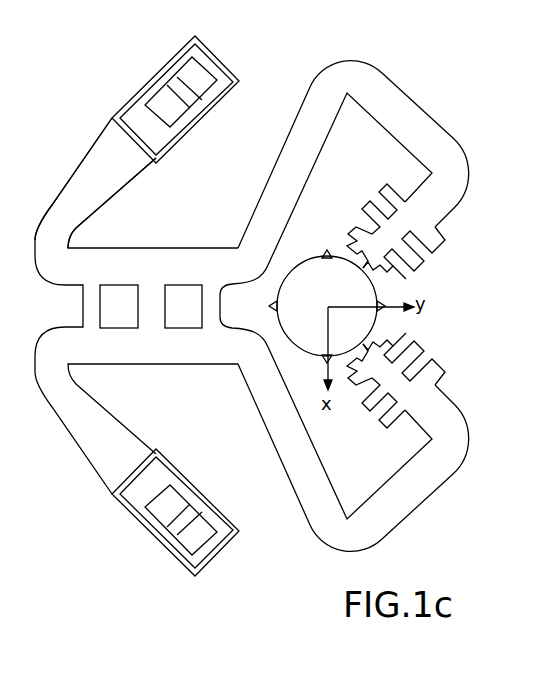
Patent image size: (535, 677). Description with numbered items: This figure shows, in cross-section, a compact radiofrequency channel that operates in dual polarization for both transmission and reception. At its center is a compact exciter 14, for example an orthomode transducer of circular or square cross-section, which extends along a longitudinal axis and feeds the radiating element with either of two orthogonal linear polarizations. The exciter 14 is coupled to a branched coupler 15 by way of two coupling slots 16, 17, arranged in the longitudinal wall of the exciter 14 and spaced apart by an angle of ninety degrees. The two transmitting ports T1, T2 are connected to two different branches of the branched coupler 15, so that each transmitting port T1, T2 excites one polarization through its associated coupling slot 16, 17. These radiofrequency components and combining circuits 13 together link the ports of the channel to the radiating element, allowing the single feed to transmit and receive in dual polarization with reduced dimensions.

The combining circuits 13 is at (413, 127).
The compact exciter 14 is at (300, 318).
The branched coupler 15 is at (152, 259).
The coupling slot 16 is at (358, 267).
The coupling slot 17 is at (372, 342).
The transmitting port T1 is at (187, 73).
The transmitting port T2 is at (193, 537).